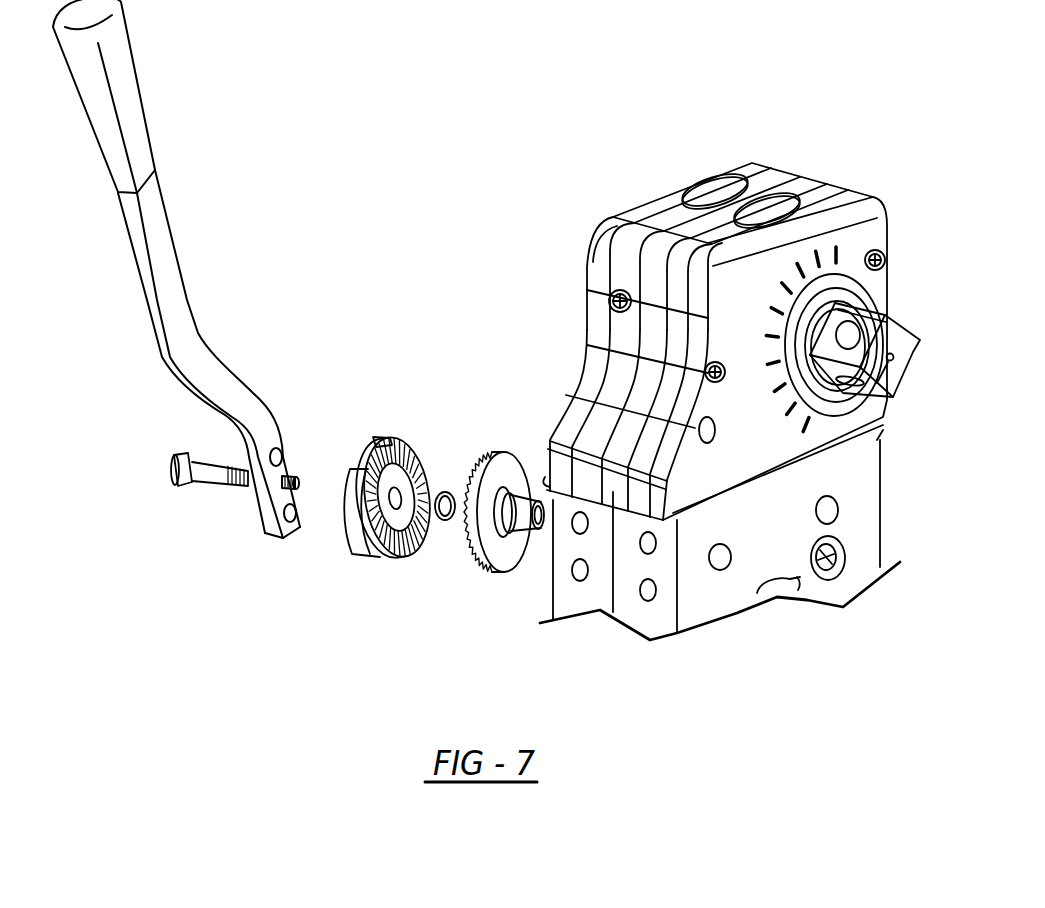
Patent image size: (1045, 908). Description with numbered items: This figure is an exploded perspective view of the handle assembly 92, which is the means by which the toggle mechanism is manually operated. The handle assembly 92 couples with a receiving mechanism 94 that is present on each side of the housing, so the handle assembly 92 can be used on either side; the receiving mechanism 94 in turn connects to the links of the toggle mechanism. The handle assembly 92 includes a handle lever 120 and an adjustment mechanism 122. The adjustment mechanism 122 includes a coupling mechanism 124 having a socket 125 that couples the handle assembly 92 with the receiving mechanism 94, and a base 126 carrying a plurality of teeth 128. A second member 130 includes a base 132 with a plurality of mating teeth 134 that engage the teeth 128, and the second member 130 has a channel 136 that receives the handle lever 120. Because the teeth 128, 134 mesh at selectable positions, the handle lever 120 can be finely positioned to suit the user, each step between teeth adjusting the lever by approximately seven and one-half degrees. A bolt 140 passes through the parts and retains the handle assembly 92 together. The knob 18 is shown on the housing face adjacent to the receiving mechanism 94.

The handle assembly 92 is at (388, 112).
The knob 18 is at (848, 302).
The receiving mechanism 94 is at (823, 563).
The handle lever 120 is at (183, 281).
The adjustment mechanism 122 is at (430, 407).
The coupling mechanism 124 is at (498, 567).
The socket 125 is at (528, 534).
The base 126 is at (515, 470).
The teeth 128 is at (477, 463).
The second member 130 is at (368, 558).
The base 132 is at (352, 520).
The mating teeth 134 is at (410, 547).
The channel 136 is at (372, 447).
The bolt 140 is at (166, 484).